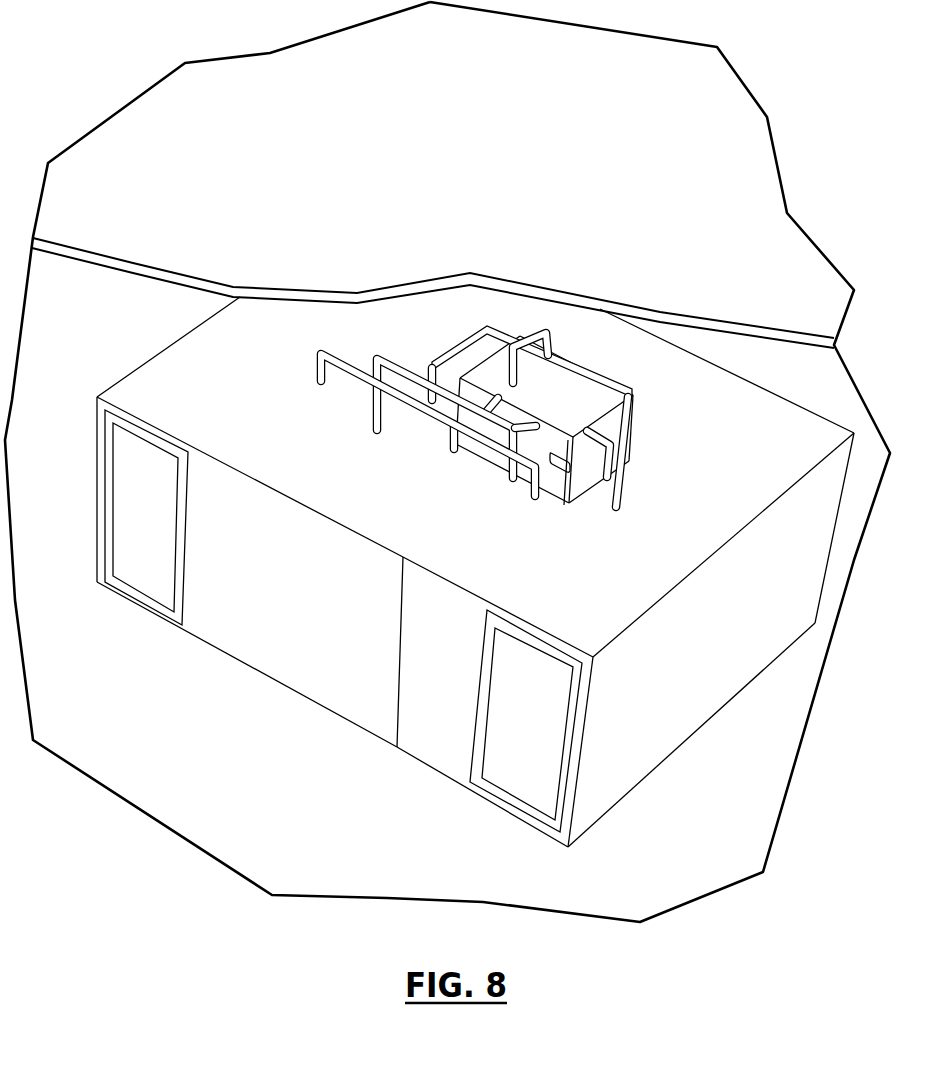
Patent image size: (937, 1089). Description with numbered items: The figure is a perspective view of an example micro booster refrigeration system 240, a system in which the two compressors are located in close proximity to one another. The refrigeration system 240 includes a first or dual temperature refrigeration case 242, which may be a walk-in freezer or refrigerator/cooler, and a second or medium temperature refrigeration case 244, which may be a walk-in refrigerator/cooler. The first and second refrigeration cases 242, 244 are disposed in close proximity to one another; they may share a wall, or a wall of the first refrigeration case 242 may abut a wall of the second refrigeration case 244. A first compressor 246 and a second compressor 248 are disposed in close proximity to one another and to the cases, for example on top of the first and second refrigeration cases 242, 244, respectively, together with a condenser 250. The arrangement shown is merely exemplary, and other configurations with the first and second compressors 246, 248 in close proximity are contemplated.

The micro booster refrigeration system 240 is at (177, 127).
The first or dual temperature refrigeration case 242 is at (437, 750).
The second or medium temperature refrigeration case 244 is at (292, 672).
The first compressor 246 is at (574, 417).
The second compressor 248 is at (468, 440).
The condenser 250 is at (567, 363).